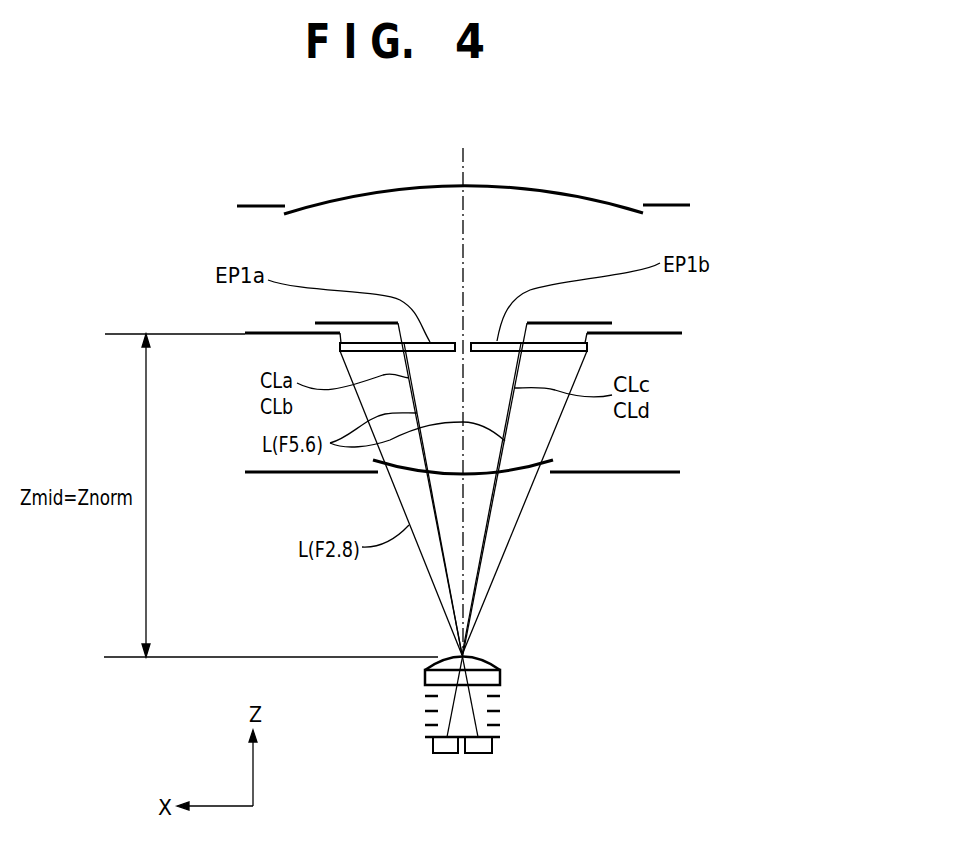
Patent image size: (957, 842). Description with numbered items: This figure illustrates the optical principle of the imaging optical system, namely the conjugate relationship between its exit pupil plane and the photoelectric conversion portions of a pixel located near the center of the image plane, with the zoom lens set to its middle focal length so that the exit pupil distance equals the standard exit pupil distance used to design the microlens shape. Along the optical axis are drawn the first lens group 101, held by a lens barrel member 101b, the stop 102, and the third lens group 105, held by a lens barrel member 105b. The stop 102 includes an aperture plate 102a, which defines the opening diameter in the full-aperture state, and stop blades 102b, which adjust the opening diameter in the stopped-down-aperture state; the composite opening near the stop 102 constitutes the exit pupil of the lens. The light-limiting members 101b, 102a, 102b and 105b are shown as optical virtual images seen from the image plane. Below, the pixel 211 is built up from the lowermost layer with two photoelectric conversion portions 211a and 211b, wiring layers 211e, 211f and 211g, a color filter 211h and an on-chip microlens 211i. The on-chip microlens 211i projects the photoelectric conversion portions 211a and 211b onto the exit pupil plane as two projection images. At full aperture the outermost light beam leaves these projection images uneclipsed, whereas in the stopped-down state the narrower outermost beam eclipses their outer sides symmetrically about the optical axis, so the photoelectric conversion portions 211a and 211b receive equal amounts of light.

The first lens group 101 is at (576, 190).
The lens barrel member 101b is at (672, 204).
The stop 102 is at (452, 328).
The aperture plate 102a is at (637, 333).
The stop blades 102b is at (595, 322).
The third lens group 105 is at (520, 473).
The lens barrel member 105b is at (648, 471).
The pixel 211 is at (520, 716).
The photoelectric conversion portion 211a is at (486, 754).
The photoelectric conversion portion 211b is at (433, 753).
The wiring layer 211e is at (496, 727).
The wiring layer 211f is at (493, 712).
The wiring layer 211g is at (493, 697).
The color filter 211h is at (500, 678).
The on-chip microlens 211i is at (483, 661).